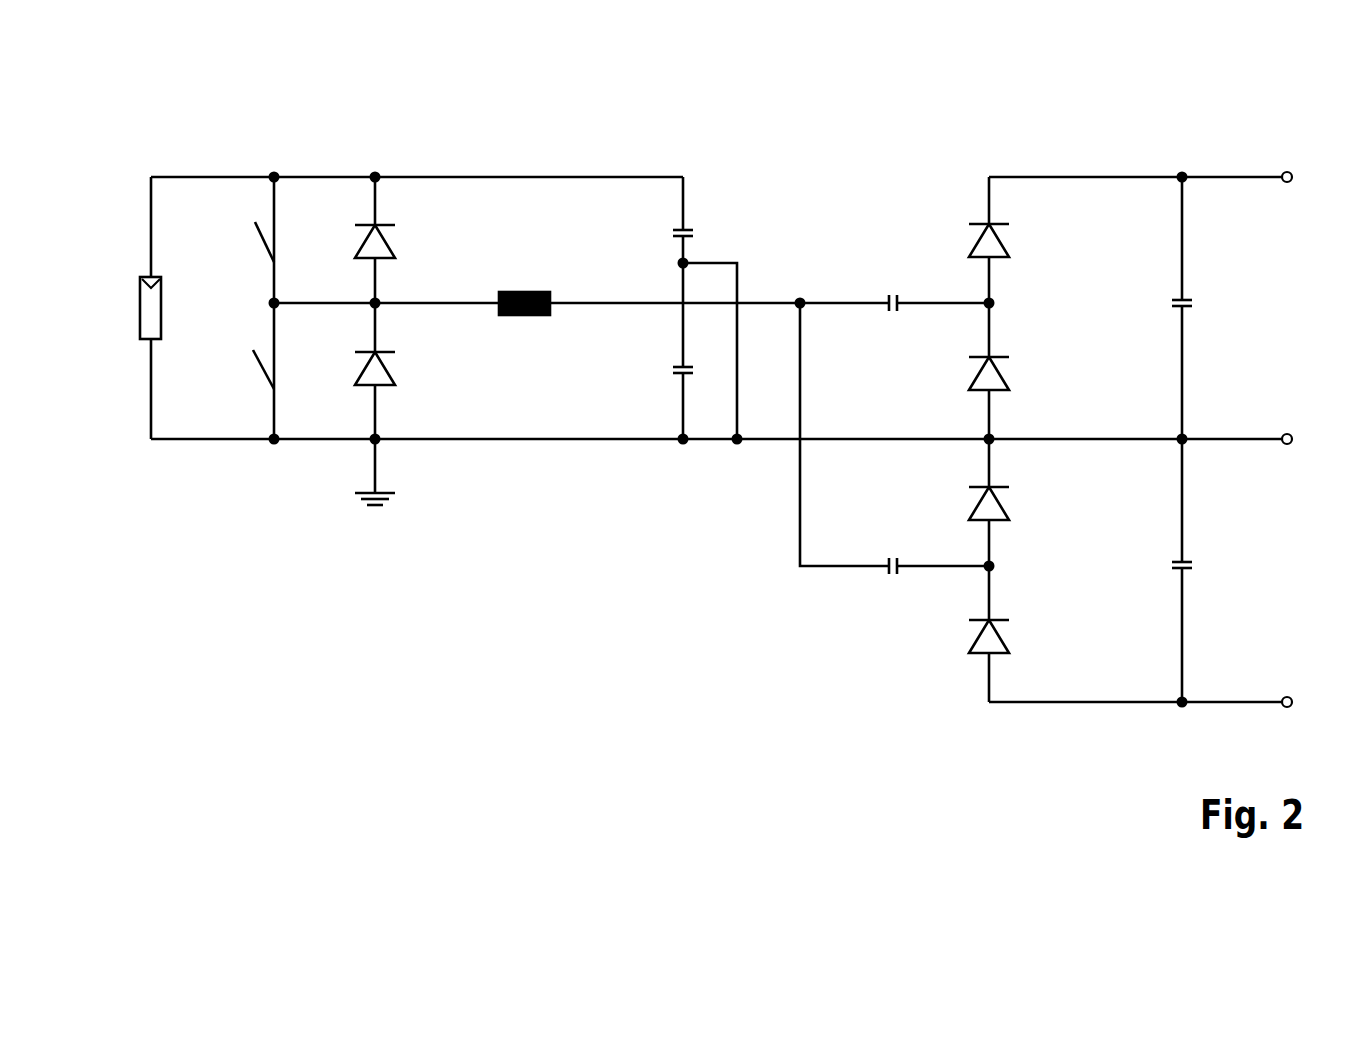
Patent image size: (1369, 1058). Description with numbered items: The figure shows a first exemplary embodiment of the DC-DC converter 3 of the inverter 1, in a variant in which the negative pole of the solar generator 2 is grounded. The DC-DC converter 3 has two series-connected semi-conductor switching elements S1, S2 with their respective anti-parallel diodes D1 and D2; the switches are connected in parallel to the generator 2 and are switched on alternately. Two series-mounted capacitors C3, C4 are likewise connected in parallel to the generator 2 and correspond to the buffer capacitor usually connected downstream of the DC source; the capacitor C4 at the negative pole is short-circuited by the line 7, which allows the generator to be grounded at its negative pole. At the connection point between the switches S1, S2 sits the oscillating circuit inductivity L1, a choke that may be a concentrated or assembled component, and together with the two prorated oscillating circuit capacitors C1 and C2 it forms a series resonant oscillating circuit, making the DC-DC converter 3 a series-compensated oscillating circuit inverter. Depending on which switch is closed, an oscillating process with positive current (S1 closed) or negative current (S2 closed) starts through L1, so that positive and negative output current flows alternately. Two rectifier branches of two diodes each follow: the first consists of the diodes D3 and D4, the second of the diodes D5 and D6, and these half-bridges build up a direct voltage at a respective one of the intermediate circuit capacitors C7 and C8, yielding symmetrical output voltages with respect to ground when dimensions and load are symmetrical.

The inverter 1 is at (698, 433).
The solar generator 2 is at (147, 309).
The DC-DC converter 3 is at (914, 427).
The line 7 is at (737, 288).
The semi-conductor switch S1 is at (246, 240).
The semi-conductor switch S2 is at (246, 371).
The anti-parallel diode D1 is at (394, 240).
The anti-parallel diode D2 is at (394, 371).
The diode D3 is at (1009, 240).
The diode D4 is at (1009, 371).
The diode D5 is at (1009, 502).
The diode D6 is at (1009, 634).
The oscillating circuit inductivity L1 is at (524, 288).
The oscillating circuit capacitor C1 is at (893, 289).
The oscillating circuit capacitor C2 is at (894, 438).
The buffer capacitor C3 is at (664, 240).
The buffer capacitor C4 is at (664, 371).
The intermediate circuit capacitor C7 is at (1163, 308).
The intermediate circuit capacitor C8 is at (1163, 570).